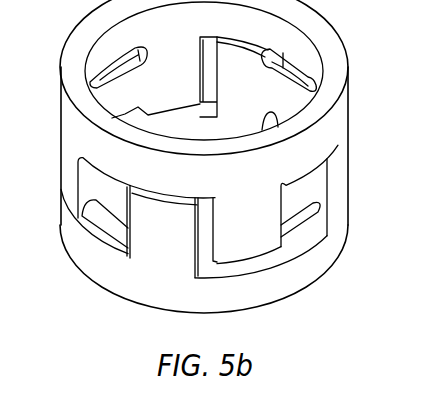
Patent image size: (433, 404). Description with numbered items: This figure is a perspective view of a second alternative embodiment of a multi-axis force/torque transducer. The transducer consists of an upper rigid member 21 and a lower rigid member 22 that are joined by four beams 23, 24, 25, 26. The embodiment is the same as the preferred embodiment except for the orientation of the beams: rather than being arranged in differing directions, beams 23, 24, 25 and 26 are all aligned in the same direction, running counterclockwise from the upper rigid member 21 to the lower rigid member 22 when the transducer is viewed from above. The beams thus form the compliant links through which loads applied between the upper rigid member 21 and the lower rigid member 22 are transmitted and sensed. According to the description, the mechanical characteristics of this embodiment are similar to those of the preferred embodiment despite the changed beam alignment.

The upper rigid member 21 is at (83, 33).
The lower rigid member 22 is at (195, 305).
The beam 23 is at (138, 88).
The beam 24 is at (313, 190).
The beam 25 is at (290, 94).
The beam 26 is at (113, 193).